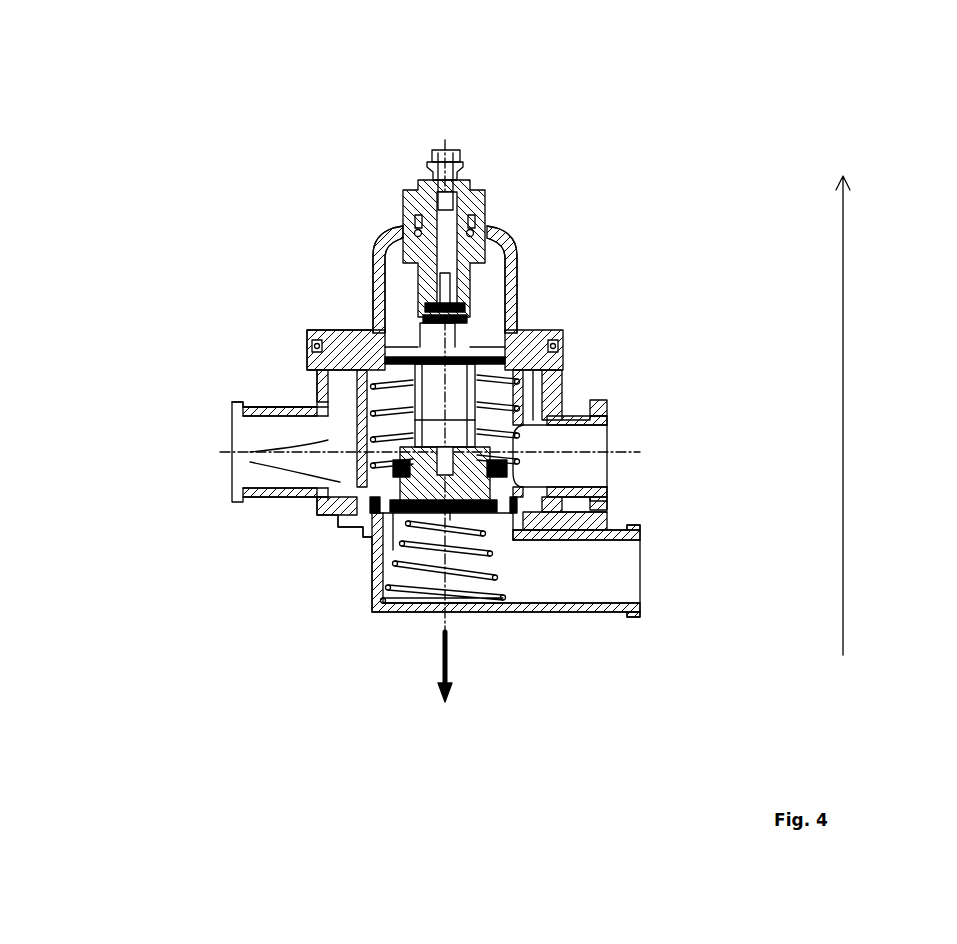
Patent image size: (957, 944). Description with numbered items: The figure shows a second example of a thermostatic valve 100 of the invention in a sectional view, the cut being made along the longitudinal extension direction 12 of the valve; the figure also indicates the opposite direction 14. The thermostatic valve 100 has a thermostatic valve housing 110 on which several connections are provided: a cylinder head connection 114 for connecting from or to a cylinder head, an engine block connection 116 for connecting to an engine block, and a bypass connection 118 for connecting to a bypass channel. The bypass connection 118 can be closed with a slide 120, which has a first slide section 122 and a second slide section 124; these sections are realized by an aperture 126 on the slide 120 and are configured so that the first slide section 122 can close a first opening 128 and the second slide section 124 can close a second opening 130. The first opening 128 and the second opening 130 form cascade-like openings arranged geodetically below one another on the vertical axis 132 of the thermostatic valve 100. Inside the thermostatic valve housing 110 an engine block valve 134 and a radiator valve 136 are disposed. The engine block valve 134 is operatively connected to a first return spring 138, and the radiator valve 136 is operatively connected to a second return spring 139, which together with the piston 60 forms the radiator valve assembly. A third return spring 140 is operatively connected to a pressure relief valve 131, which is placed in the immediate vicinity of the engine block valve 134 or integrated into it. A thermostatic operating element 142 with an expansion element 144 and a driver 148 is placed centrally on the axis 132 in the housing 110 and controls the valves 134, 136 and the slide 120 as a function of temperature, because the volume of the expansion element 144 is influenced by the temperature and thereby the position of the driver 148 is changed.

The thermostatic valve 100 is at (464, 125).
The thermostatic valve housing 110 is at (516, 290).
The longitudinal extension direction 12 is at (858, 415).
The downward direction 14 is at (461, 667).
The piston 60 is at (455, 384).
The second return spring 139 is at (621, 379).
The cylinder head connection 114 is at (633, 452).
The engine block connection 116 is at (673, 586).
The bypass connection 118 is at (200, 448).
The slide 120 is at (323, 460).
The first slide section 122 is at (372, 352).
The second slide section 124 is at (355, 447).
The aperture 126 is at (360, 372).
The first opening 128 is at (357, 427).
The second opening 130 is at (343, 492).
The pressure relief valve 131 is at (513, 530).
The vertical axis 132 is at (385, 605).
The engine block valve 134 is at (535, 520).
The radiator valve 136 is at (366, 372).
The first return spring 138 is at (500, 468).
The third return spring 140 is at (522, 505).
The thermostatic operating element 142 is at (540, 410).
The expansion element 144 is at (656, 462).
The driver 148 is at (480, 513).